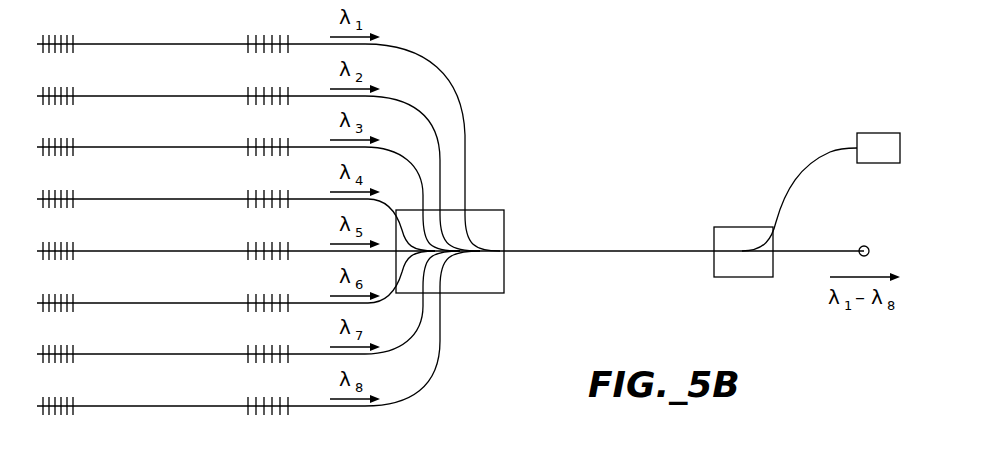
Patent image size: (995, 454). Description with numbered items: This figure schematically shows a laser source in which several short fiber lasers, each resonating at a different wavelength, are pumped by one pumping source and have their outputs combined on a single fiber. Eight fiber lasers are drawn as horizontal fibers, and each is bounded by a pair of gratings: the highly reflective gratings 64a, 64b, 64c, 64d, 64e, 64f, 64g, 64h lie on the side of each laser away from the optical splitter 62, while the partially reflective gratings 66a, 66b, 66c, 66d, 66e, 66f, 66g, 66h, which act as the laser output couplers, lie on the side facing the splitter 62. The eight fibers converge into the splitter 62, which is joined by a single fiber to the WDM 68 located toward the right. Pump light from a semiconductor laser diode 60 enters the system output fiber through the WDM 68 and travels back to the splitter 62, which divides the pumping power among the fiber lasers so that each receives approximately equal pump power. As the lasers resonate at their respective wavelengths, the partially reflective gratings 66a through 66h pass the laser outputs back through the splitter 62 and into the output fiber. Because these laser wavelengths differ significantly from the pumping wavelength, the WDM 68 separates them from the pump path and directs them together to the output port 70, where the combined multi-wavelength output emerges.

The highly reflective grating 64a is at (62, 36).
The highly reflective grating 64b is at (62, 88).
The highly reflective grating 64c is at (62, 139).
The highly reflective grating 64d is at (62, 191).
The highly reflective grating 64e is at (62, 243).
The highly reflective grating 64f is at (62, 295).
The highly reflective grating 64g is at (62, 346).
The highly reflective grating 64h is at (62, 398).
The partially reflective grating 66a is at (278, 36).
The partially reflective grating 66b is at (278, 88).
The partially reflective grating 66c is at (278, 139).
The partially reflective grating 66d is at (278, 191).
The partially reflective grating 66e is at (278, 243).
The partially reflective grating 66f is at (278, 295).
The partially reflective grating 66g is at (278, 346).
The partially reflective grating 66h is at (278, 398).
The optical splitter 62 is at (470, 293).
The WDM 68 is at (745, 277).
The output port 70 is at (862, 245).
The semiconductor laser diode 60 is at (870, 133).